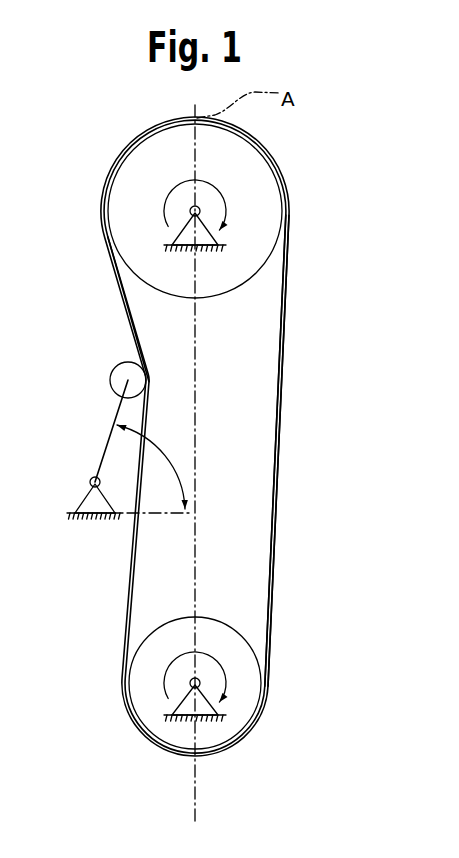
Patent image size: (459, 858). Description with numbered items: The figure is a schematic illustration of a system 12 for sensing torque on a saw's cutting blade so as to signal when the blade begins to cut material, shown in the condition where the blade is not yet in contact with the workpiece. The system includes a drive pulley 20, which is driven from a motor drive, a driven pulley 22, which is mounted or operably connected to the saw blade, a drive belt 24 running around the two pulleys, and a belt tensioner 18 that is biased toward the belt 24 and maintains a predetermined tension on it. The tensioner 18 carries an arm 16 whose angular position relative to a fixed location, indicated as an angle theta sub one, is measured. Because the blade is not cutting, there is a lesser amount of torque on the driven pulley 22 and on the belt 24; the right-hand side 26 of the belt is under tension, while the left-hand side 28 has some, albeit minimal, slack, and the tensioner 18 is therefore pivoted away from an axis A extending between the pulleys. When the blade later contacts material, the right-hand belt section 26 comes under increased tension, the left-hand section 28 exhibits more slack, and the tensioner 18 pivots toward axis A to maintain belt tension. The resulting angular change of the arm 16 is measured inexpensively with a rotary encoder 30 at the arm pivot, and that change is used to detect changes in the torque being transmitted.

The system 12 is at (293, 175).
The arm 16 is at (110, 437).
The belt tensioner 18 is at (109, 366).
The drive pulley 20 is at (255, 681).
The driven pulley 22 is at (121, 192).
The drive belt 24 is at (292, 306).
The right-hand side of the belt 26 is at (281, 427).
The left-hand side of the belt 28 is at (119, 292).
The rotary encoder 30 is at (88, 476).